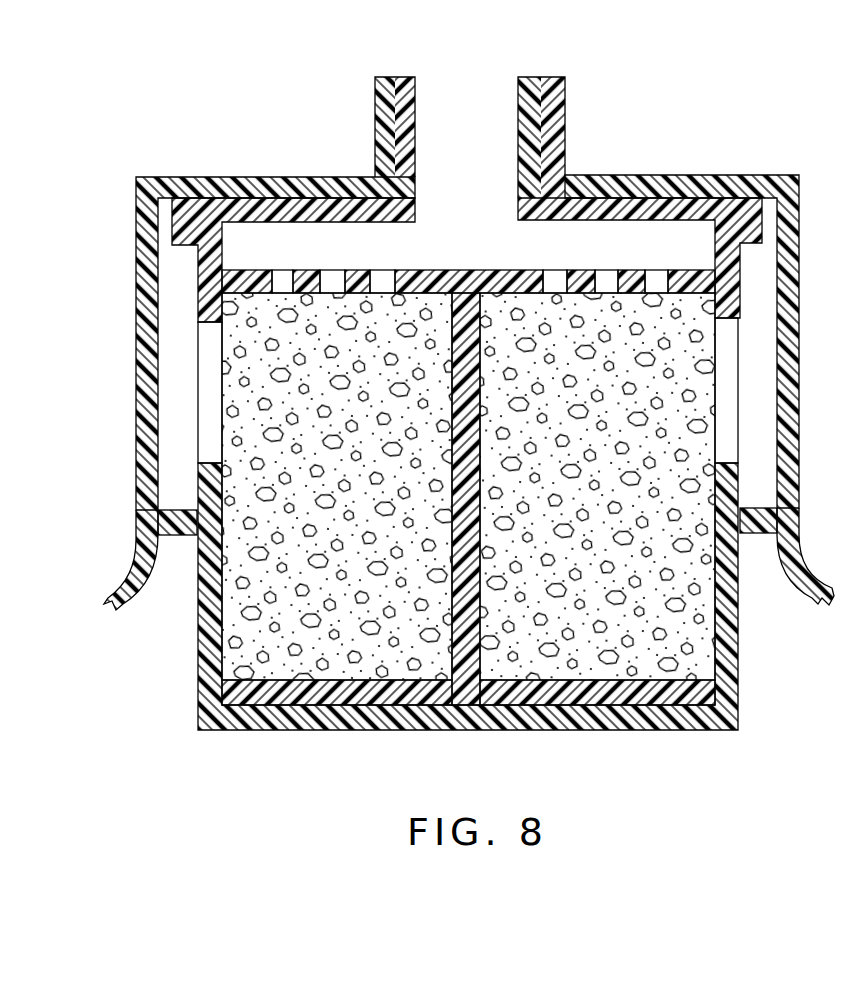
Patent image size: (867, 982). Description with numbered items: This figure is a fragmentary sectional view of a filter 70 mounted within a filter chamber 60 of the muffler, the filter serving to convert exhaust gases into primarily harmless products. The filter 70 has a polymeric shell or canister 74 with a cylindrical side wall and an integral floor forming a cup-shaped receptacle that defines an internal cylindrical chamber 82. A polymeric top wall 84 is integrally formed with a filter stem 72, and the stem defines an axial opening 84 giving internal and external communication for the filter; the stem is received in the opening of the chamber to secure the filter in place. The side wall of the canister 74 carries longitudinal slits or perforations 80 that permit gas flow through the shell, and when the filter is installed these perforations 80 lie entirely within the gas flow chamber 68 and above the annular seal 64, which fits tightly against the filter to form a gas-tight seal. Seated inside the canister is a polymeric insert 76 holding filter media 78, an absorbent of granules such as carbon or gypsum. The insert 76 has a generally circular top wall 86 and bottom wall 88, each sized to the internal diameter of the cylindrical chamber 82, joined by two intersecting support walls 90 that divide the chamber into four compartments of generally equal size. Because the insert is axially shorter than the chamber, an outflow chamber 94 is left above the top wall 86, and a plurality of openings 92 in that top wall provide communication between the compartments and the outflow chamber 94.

The filter chamber 60 is at (158, 295).
The annular seal 64 is at (188, 536).
The gas flow chamber 68 is at (175, 451).
The filter 70 is at (716, 747).
The filter stem 72 is at (545, 112).
The canister 74 is at (202, 660).
The insert 76 is at (276, 266).
The filter media 78 is at (623, 653).
The perforations 80 is at (200, 388).
The cylindrical chamber 82 is at (712, 244).
The top wall 84 is at (518, 95).
The top wall 86 is at (693, 303).
The bottom wall 88 is at (741, 727).
The support walls 90 is at (598, 449).
The openings 92 is at (378, 278).
The outflow chamber 94 is at (237, 243).